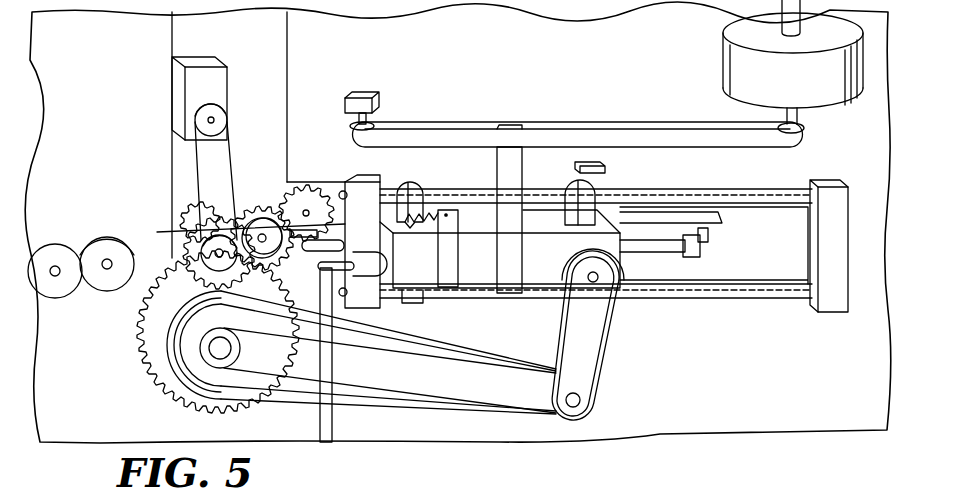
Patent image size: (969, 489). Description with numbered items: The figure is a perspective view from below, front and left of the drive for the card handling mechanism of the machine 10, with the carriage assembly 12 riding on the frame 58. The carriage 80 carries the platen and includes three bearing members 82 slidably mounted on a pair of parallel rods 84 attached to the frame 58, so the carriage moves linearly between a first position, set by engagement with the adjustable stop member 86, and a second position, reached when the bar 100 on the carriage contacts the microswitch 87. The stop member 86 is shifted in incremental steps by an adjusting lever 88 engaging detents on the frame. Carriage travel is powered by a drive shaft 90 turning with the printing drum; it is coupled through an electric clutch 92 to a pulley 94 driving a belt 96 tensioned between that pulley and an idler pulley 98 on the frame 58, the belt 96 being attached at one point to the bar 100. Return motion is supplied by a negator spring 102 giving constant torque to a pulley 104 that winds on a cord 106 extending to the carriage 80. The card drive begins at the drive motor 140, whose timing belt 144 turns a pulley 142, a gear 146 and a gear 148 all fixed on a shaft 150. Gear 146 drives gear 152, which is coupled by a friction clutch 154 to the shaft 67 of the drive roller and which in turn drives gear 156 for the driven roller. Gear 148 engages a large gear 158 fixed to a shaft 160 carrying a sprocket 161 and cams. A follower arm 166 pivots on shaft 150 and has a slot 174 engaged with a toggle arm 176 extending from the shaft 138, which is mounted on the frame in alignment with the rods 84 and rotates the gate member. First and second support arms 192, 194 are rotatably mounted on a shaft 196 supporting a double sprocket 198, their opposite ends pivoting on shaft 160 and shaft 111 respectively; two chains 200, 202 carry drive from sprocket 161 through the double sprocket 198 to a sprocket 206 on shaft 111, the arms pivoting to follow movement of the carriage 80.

The machine 10 is at (379, 487).
The carriage assembly 12 is at (481, 105).
The frame 58 is at (785, 381).
The shaft 67 is at (262, 238).
The carriage 80 is at (560, 268).
The bearing members 82 is at (410, 183).
The rods 84 is at (773, 193).
The stop member 86 is at (350, 247).
The microswitch 87 is at (608, 166).
The adjusting lever 88 is at (333, 425).
The drive shaft 90 is at (786, 24).
The electric clutch 92 is at (730, 60).
The pulley 94 is at (804, 128).
The belt 96 is at (620, 133).
The idler pulley 98 is at (373, 120).
The bar 100 is at (505, 166).
The negator spring 102 is at (62, 246).
The pulley 104 is at (108, 250).
The cord 106 is at (236, 221).
The shaft 111 is at (598, 285).
The shaft 138 is at (334, 240).
The drive motor 140 is at (193, 88).
The pulley 142 is at (200, 252).
The timing belt 144 is at (197, 158).
The gear 146 is at (193, 212).
The gear 148 is at (222, 205).
The shaft 150 is at (215, 260).
The gear 152 is at (238, 212).
The friction clutch 154 is at (250, 248).
The gear 156 is at (308, 207).
The large gear 158 is at (150, 356).
The shaft 160 is at (220, 352).
The sprocket 161 is at (195, 368).
The follower arm 166 is at (283, 268).
The slot 174 is at (296, 250).
The toggle arm 176 is at (313, 240).
The first support arm 192 is at (421, 400).
The second support arm 194 is at (583, 358).
The shaft 196 is at (581, 403).
The double sprocket 198 is at (553, 368).
The chain 200 is at (406, 357).
The chain 202 is at (606, 341).
The sprocket 206 is at (613, 265).